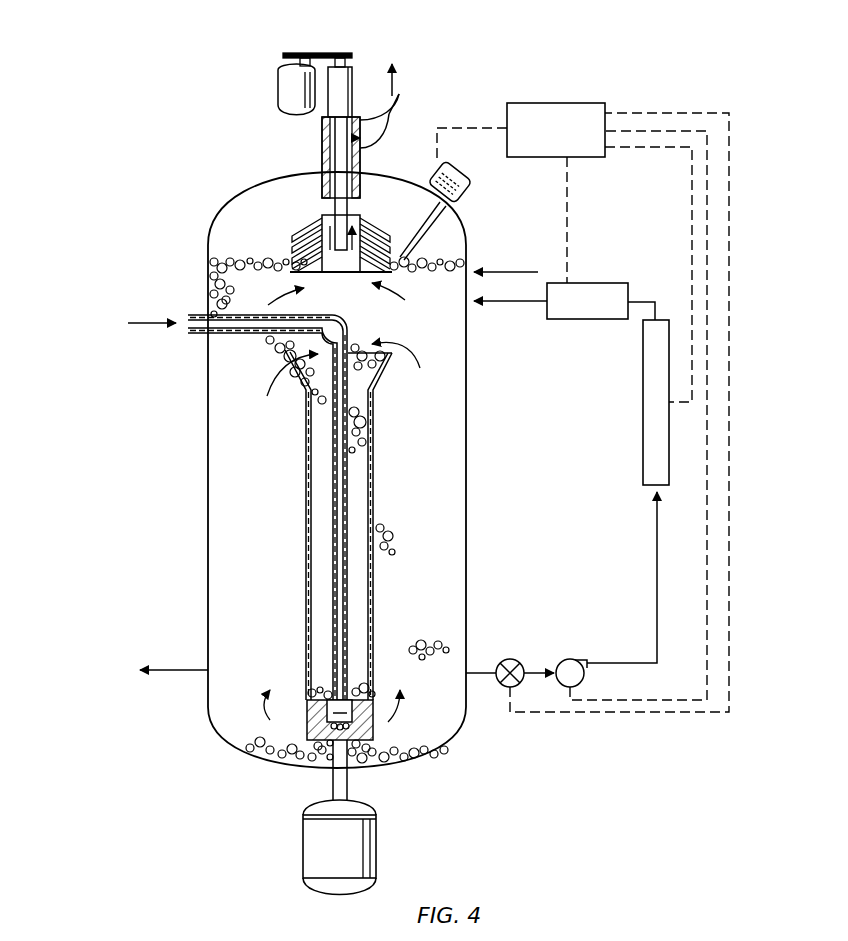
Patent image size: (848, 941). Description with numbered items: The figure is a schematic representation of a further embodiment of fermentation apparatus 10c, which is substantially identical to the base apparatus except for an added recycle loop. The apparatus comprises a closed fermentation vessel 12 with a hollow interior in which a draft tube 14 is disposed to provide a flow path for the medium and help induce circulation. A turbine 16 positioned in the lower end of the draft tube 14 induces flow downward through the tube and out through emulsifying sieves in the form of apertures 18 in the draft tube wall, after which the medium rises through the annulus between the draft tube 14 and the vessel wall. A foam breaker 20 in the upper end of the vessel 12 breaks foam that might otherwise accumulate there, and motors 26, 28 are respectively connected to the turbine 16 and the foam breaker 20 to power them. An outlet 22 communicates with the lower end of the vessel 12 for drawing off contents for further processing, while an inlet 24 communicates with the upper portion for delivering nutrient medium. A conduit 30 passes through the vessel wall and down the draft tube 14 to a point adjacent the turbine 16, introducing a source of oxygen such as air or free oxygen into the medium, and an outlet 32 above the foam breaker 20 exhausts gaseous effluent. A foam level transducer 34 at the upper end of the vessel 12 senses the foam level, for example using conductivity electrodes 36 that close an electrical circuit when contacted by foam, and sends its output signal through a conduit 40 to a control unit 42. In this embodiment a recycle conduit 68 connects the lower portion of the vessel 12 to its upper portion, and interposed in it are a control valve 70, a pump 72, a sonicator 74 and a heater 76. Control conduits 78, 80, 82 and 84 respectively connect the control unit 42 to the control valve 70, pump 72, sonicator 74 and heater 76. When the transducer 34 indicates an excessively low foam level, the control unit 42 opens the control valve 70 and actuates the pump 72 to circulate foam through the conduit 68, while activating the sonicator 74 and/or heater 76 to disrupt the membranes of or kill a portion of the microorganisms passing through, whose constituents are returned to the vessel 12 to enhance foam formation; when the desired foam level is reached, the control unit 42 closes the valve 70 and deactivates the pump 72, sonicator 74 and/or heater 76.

The fermentation apparatus 10c is at (214, 158).
The fermentation vessel 12 is at (208, 428).
The draft tube 14 is at (306, 496).
The turbine 16 is at (355, 742).
The apertures 18 is at (306, 714).
The foam breaker 20 is at (292, 241).
The outlet 22 is at (189, 668).
The inlet 24 is at (508, 272).
The motor 26 is at (376, 858).
The motor 28 is at (280, 84).
The conduit 30 is at (193, 315).
The outlet 32 is at (396, 104).
The foam level transducer 34 is at (468, 188).
The conductivity electrodes 36 is at (414, 244).
The conduit 40 is at (465, 128).
The control unit 42 is at (578, 103).
The recycle conduit 68 is at (657, 557).
The control valve 70 is at (510, 659).
The pump 72 is at (566, 660).
The sonicator 74 is at (643, 406).
The heater 76 is at (567, 319).
The control conduit 78 is at (510, 706).
The control conduit 80 is at (578, 694).
The control conduit 82 is at (692, 236).
The control conduit 84 is at (567, 205).